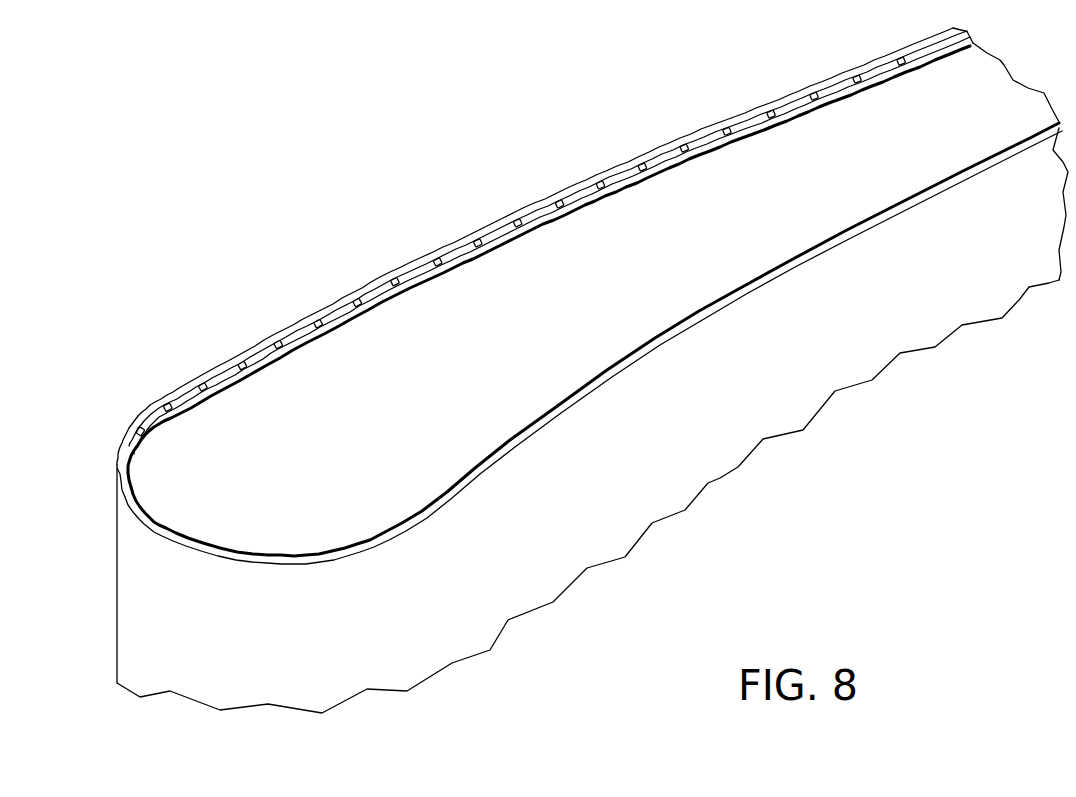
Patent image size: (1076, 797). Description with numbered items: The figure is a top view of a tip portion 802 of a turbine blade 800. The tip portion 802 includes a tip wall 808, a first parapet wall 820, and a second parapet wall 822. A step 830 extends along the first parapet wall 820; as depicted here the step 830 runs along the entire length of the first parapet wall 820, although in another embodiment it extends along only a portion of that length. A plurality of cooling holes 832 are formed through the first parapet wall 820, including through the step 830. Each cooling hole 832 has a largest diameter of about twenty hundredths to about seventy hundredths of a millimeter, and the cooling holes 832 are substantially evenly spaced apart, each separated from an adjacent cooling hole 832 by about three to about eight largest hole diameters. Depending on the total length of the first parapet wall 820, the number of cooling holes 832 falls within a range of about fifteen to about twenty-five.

The turbine blade 800 is at (132, 588).
The tip portion 802 is at (545, 246).
The tip wall 808 is at (717, 165).
The first parapet wall 820 is at (413, 268).
The second parapet wall 822 is at (692, 464).
The step 830 is at (255, 363).
The cooling holes 832 is at (197, 385).